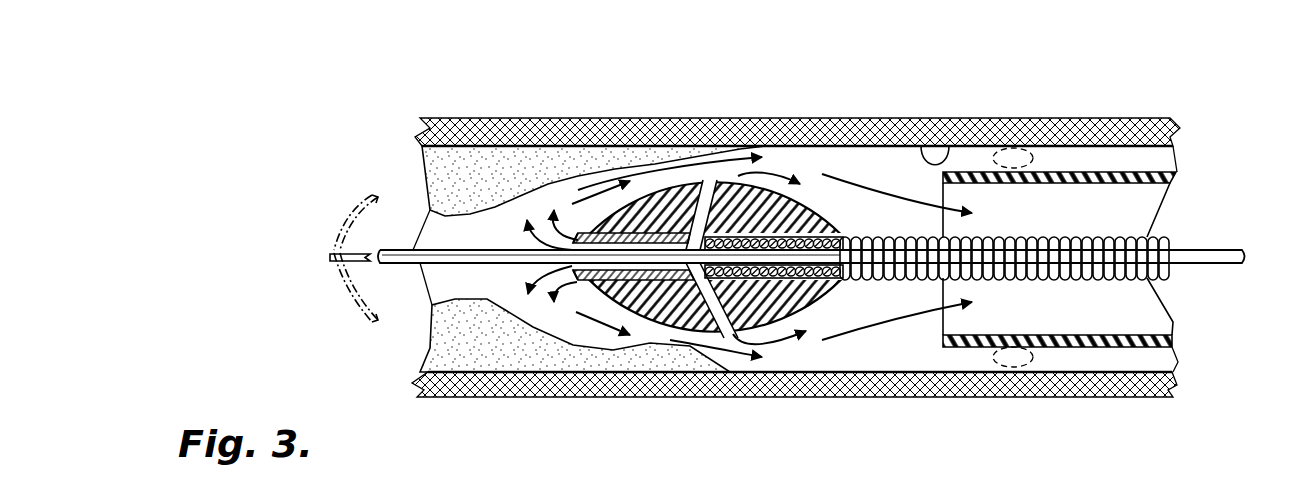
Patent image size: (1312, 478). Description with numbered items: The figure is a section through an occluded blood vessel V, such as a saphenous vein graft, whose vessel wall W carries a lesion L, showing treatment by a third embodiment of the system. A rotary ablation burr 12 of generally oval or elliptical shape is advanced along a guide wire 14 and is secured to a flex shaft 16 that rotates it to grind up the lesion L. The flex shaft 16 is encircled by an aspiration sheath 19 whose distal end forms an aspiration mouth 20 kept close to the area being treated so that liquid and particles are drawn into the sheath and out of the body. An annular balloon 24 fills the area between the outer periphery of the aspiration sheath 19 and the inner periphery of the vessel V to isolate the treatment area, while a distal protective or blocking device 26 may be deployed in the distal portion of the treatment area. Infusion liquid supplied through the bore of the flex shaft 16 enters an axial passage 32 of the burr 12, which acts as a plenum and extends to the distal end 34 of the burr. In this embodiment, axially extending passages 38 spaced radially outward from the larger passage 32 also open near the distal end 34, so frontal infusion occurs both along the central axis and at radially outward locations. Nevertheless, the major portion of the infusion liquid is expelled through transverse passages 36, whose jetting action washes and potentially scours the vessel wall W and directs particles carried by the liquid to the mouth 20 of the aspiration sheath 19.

The rotary ablation burr 12 is at (678, 213).
The guide wire 14 is at (400, 258).
The flex shaft 16 is at (1033, 240).
The aspiration sheath 19 is at (1177, 171).
The aspiration mouth 20 is at (942, 323).
The annular balloon 24 is at (1020, 158).
The distal protective or blocking device 26 is at (358, 206).
The axial passage 32 is at (584, 238).
The distal end of the burr 34 is at (594, 272).
The transverse passages 36 is at (808, 195).
The axially extending passages 38 is at (670, 233).
The lesion L is at (553, 173).
The blood vessel V is at (890, 132).
The vessel wall W is at (945, 150).